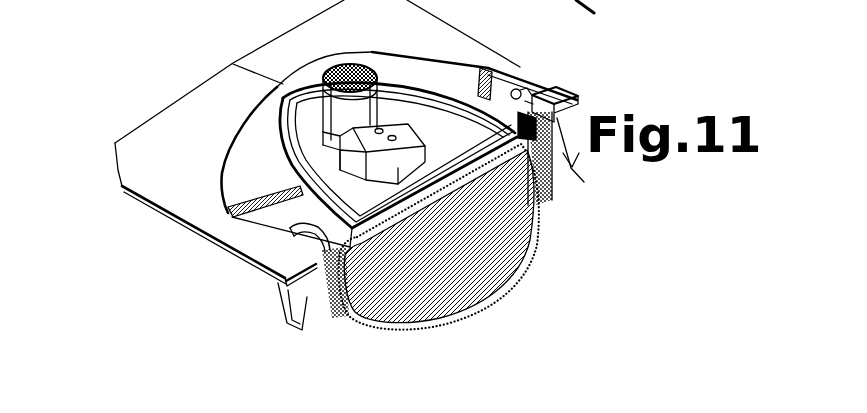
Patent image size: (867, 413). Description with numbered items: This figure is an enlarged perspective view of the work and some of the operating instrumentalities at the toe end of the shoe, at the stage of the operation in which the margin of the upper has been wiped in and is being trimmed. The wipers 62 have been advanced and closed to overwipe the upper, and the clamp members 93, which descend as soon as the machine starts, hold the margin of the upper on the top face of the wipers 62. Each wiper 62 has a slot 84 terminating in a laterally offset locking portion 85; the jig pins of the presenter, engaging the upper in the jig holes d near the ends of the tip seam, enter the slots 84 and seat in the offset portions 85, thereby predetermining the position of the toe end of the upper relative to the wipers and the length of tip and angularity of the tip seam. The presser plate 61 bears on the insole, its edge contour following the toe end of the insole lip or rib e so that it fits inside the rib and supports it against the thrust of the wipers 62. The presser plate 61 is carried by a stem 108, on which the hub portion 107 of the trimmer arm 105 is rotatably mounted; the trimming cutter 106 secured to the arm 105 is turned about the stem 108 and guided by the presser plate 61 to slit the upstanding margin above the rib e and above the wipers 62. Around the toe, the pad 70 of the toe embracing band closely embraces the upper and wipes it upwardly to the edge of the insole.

The clamp member 93 is at (307, 77).
The wiper 62 is at (487, 52).
The hub portion 107 is at (385, 88).
The presser plate 61 is at (417, 110).
The stem 108 is at (345, 65).
The arm 105 is at (408, 130).
The trimming cutter 106 is at (420, 158).
The locking portion 85 is at (513, 90).
The slot 84 is at (552, 100).
The jig hole d is at (527, 100).
The lip or rib e is at (550, 147).
The pad 70 is at (548, 170).